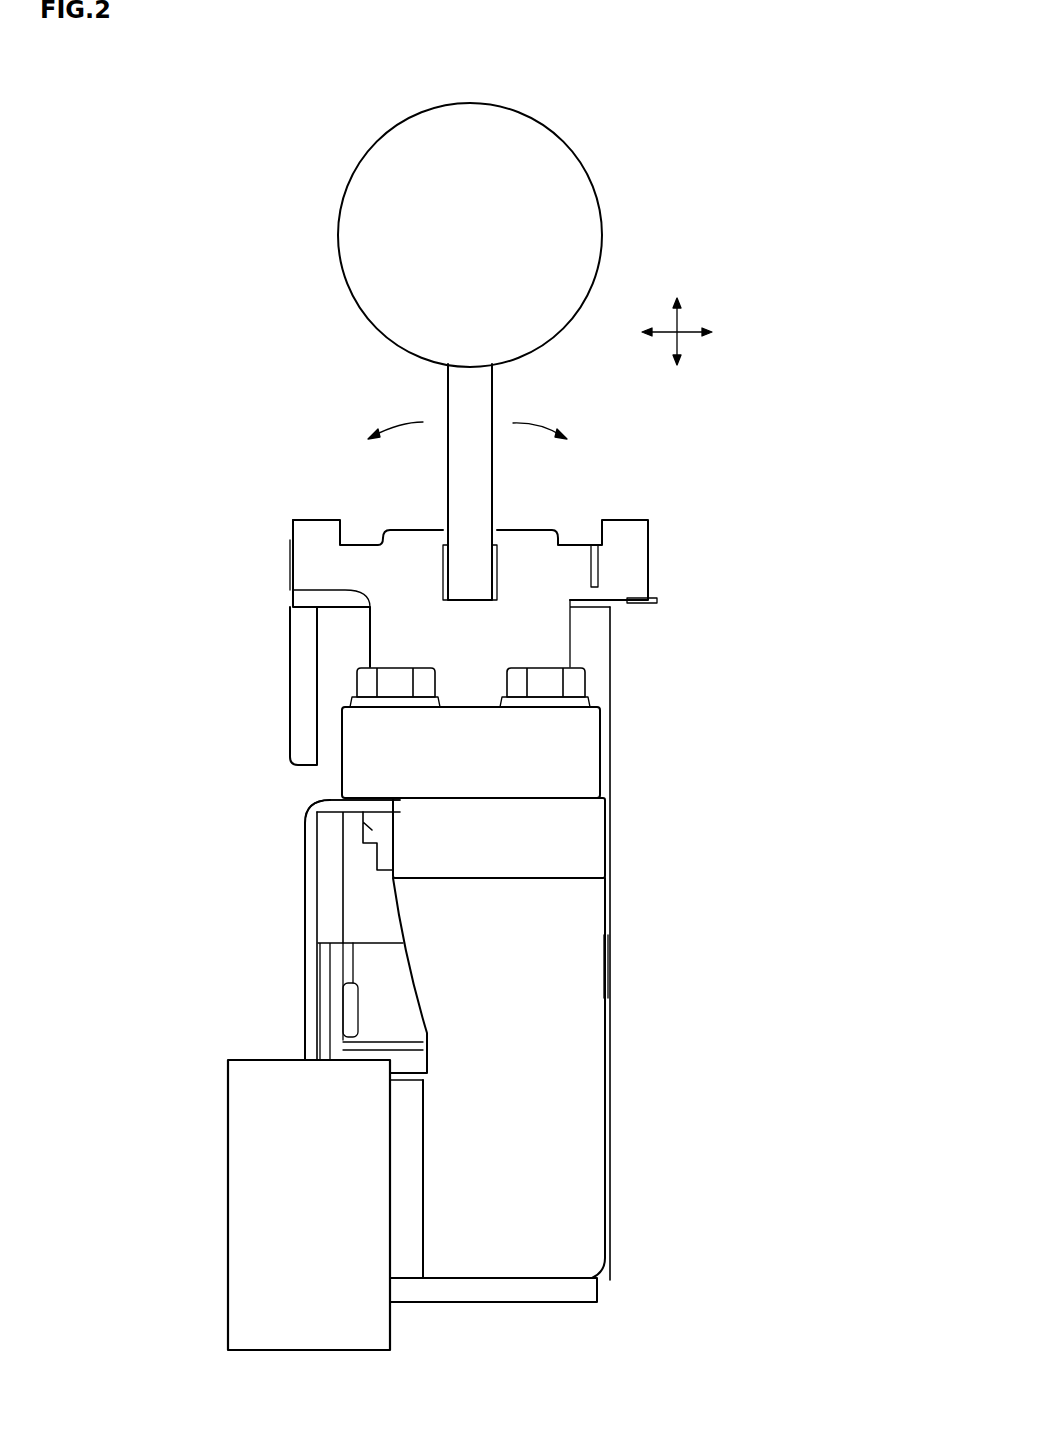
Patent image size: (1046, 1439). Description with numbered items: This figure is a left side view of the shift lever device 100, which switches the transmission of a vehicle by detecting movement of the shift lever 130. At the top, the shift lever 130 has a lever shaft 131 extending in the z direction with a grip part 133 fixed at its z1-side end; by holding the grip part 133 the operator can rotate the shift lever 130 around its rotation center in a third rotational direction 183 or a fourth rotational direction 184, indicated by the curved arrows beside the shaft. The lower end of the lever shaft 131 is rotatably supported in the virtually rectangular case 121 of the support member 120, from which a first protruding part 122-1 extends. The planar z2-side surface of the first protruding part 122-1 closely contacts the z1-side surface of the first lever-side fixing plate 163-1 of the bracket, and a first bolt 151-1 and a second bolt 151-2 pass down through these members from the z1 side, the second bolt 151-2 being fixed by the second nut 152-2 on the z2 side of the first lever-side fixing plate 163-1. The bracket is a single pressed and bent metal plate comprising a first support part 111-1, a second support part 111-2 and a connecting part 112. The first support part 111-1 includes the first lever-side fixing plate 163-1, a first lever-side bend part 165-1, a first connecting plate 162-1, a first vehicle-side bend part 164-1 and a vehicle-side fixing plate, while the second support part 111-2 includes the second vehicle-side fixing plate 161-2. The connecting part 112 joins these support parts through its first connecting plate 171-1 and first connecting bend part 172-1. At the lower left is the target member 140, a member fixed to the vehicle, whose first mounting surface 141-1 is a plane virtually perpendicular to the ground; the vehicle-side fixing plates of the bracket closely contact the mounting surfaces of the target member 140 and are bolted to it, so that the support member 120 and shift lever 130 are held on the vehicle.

The shift lever device 100 is at (352, 84).
The shift lever 130 is at (390, 202).
The grip part 133 is at (577, 222).
The lever shaft 131 is at (483, 478).
The fourth rotational direction 184 is at (395, 423).
The third rotational direction 183 is at (543, 423).
The support member 120 is at (322, 530).
The case 121 is at (313, 573).
The second bolt 151-2 is at (368, 677).
The first bolt 151-1 is at (575, 677).
The first protruding part 122-1 is at (575, 758).
The first lever-side bend part 165-1 is at (585, 843).
The first lever-side fixing plate 163-1 is at (340, 803).
The first connecting bend part 172-1 is at (307, 810).
The second nut 152-2 is at (363, 838).
The connecting part 112 is at (272, 930).
The first connecting plate 171-1 is at (313, 897).
The second support part 111-2 is at (267, 979).
The second vehicle-side fixing plate 161-2 is at (307, 1037).
The first support part 111-1 is at (548, 943).
The first connecting plate 162-1 is at (555, 1215).
The target member 140 is at (242, 1283).
The first mounting surface 141-1 is at (392, 1318).
The first vehicle-side bend part 164-1 is at (410, 1227).